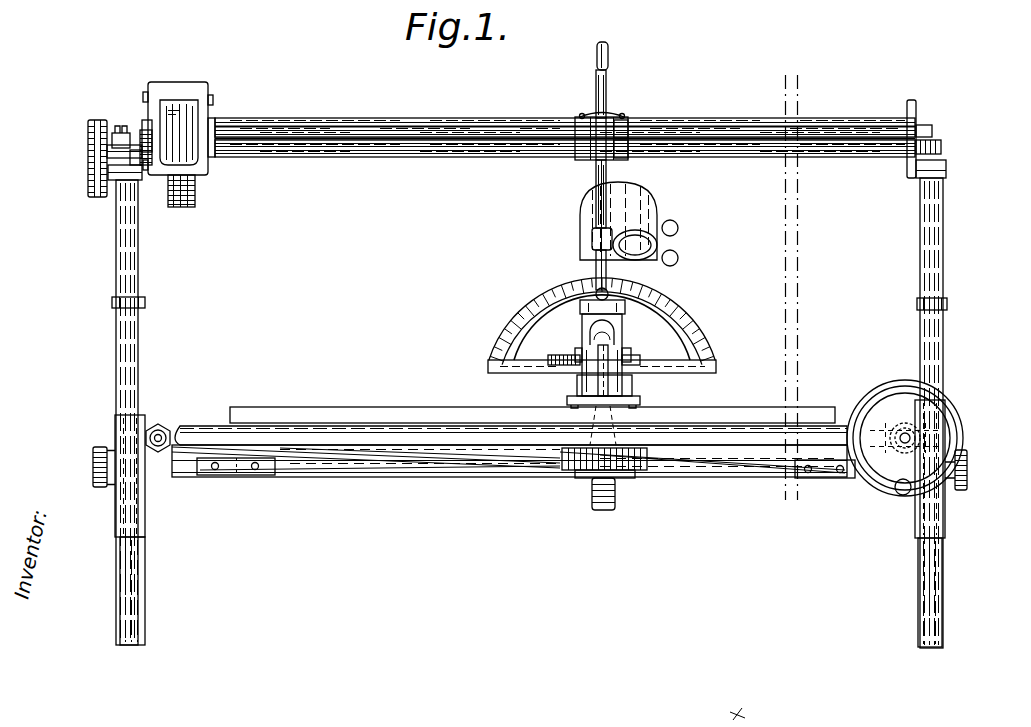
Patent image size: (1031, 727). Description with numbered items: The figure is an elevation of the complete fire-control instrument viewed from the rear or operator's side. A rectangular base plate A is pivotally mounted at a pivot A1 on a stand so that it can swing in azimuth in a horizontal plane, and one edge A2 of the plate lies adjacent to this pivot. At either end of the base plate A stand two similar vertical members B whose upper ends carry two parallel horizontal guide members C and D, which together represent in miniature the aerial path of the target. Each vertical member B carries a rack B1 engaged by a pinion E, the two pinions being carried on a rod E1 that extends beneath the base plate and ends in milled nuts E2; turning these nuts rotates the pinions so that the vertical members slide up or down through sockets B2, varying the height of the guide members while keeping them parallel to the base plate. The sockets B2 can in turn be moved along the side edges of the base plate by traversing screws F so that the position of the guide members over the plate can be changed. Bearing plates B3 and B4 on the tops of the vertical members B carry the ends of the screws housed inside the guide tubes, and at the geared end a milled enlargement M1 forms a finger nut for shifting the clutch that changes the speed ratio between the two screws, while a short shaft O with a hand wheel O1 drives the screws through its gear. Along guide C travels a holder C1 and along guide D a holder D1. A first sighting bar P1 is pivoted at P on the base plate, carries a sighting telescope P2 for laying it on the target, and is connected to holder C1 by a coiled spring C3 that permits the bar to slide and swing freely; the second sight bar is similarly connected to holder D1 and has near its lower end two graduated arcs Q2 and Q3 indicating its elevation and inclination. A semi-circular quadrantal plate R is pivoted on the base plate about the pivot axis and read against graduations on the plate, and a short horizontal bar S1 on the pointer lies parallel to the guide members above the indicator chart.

The vertical member B is at (138, 262).
The rack B1 is at (140, 325).
The socket B2 is at (147, 520).
The bearing plate B3 is at (916, 115).
The bearing plate B4 is at (205, 112).
The guide member C is at (740, 120).
The holder C1 is at (624, 130).
The coiled spring C3 is at (580, 117).
The guide member D is at (738, 158).
The holder D1 is at (640, 142).
The pinion E is at (142, 488).
The rod E1 is at (410, 470).
The milled nut E2 is at (100, 450).
The traversing screw F is at (160, 426).
The milled enlargement M1 is at (142, 134).
The short shaft O is at (146, 164).
The wheel O1 is at (90, 130).
The pivot P is at (560, 364).
The sighting bar P1 is at (606, 86).
The sighting telescope P2 is at (650, 208).
The graduated arc Q2 is at (622, 316).
The graduated arc Q3 is at (640, 352).
The quadrantal plate R is at (330, 408).
The horizontal bar S1 is at (640, 401).
The base plate A is at (358, 448).
The pivot A1 is at (628, 472).
The edge A2 is at (737, 437).